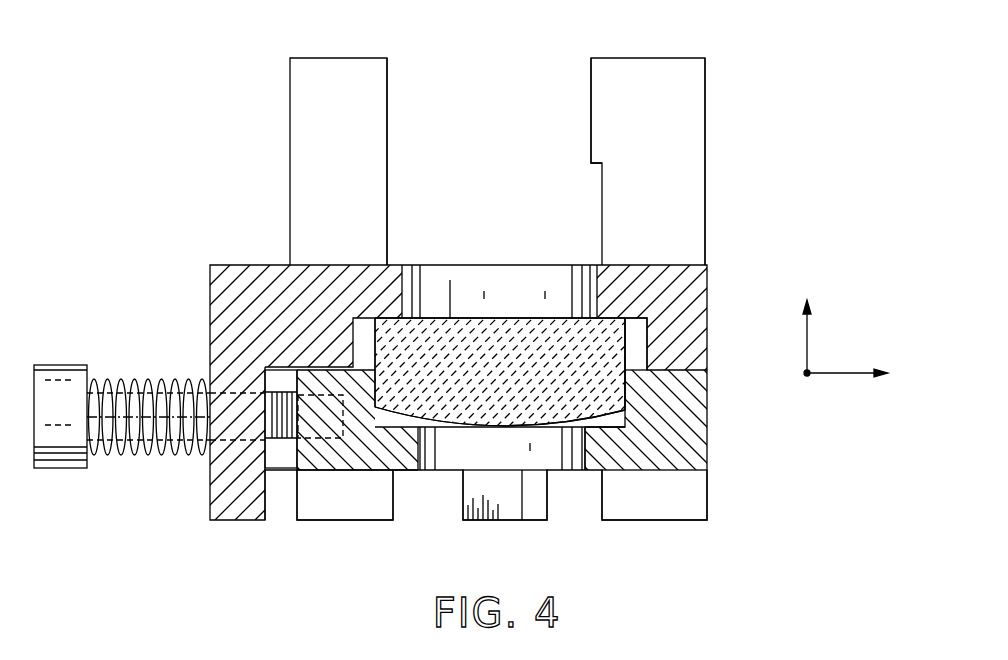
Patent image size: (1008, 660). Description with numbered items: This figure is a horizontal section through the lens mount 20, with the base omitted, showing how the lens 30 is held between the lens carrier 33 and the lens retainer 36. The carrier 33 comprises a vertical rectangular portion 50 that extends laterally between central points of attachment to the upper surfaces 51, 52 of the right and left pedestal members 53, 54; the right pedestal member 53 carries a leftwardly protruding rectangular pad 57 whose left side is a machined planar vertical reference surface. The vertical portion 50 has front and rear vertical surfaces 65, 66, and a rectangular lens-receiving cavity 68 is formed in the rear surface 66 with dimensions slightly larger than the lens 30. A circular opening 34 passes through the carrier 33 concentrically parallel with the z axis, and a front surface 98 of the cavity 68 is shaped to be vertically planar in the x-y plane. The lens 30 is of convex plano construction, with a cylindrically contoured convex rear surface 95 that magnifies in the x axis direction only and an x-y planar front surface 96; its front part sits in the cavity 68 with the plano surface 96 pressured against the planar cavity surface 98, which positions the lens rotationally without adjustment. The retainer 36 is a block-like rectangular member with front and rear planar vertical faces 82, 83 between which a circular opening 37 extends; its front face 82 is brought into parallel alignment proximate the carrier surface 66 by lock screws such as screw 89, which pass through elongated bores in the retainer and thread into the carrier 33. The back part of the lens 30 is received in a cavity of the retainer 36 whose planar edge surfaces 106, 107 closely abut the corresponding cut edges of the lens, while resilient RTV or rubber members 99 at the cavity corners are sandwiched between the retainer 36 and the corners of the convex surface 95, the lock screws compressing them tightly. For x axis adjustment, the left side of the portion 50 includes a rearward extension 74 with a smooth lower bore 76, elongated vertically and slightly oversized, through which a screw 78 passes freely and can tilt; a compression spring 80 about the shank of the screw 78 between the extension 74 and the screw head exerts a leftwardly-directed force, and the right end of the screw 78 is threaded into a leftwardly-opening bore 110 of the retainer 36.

The mount 20 is at (772, 281).
The lens 30 is at (508, 386).
The lens carrier 33 is at (258, 258).
The opening 34 is at (409, 272).
The lens retainer 36 is at (695, 442).
The opening 37 is at (423, 465).
The vertical rectangular portion 50 is at (707, 283).
The upper surface 51 is at (657, 107).
The upper surface 52 is at (348, 108).
The pedestal member 53 is at (693, 148).
The pedestal member 54 is at (374, 147).
The rectangular pad 57 is at (597, 100).
The front vertical surface 65 is at (318, 263).
The rear vertical surface 66 is at (707, 387).
The lens-receiving cavity 68 is at (368, 336).
The rearward extension 74 is at (212, 332).
The bore 76 is at (205, 467).
The screw 78 is at (57, 365).
The compression spring 80 is at (133, 457).
The front planar vertical face 82 is at (698, 366).
The rear planar vertical face 83 is at (683, 477).
The screw 89 is at (532, 523).
The convex rear surface 95 is at (584, 410).
The planar front surface 96 is at (517, 320).
The front surface of cavity 98 is at (608, 322).
The resilient members 99 is at (357, 467).
The planar edge surface 106 is at (622, 390).
The planar edge surface 107 is at (377, 401).
The bore 110 is at (313, 325).